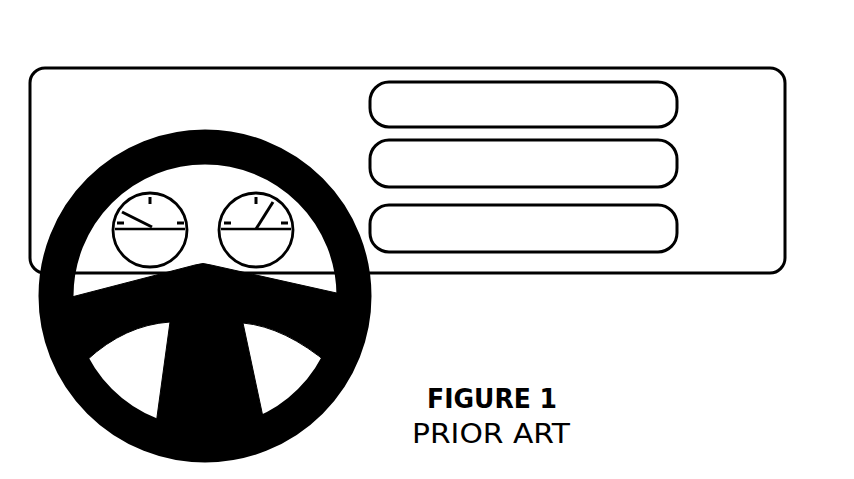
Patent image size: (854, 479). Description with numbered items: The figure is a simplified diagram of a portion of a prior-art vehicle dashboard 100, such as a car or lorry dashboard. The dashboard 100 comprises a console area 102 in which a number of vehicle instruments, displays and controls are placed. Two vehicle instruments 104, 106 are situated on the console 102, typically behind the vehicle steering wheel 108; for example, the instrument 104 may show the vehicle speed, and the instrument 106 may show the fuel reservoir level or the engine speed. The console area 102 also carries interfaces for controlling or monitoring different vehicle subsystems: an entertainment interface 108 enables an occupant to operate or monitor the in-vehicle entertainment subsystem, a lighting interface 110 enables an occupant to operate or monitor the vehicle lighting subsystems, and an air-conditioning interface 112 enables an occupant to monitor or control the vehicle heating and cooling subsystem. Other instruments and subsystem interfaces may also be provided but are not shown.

The vehicle dashboard 100 is at (291, 33).
The console area 102 is at (130, 67).
The vehicle instrument 104 is at (142, 192).
The vehicle instrument 106 is at (265, 192).
The steering wheel / entertainment interface 108 is at (678, 113).
The lighting interface 110 is at (678, 170).
The air-conditioning interface 112 is at (678, 232).